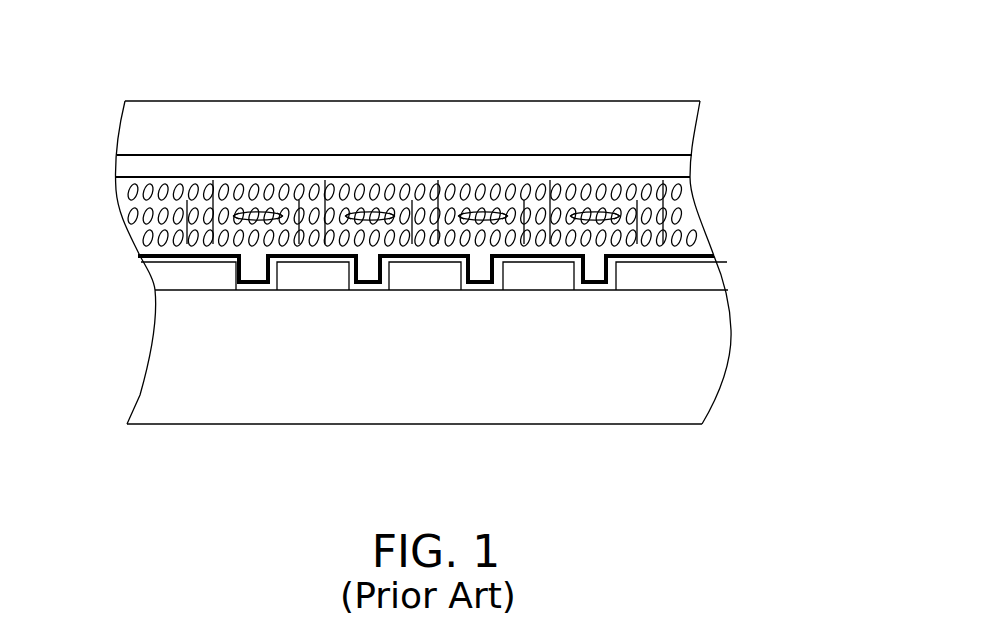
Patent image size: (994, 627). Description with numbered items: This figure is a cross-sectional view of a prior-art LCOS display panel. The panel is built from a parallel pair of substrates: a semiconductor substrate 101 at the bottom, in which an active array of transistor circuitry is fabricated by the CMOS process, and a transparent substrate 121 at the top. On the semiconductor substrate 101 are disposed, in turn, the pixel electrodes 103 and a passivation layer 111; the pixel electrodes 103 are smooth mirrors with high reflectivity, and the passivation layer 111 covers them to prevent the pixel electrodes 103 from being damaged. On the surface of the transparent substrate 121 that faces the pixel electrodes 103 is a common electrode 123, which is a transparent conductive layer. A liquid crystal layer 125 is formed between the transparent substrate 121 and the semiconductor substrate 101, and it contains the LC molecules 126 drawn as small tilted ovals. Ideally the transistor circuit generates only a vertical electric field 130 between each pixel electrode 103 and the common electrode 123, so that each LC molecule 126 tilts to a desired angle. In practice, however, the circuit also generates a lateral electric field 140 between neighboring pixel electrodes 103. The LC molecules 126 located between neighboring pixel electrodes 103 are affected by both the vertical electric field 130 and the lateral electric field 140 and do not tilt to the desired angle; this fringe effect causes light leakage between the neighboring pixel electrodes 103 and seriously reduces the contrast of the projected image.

The semiconductor substrate 101 is at (714, 350).
The pixel electrodes 103 is at (157, 274).
The passivation layer 111 is at (700, 258).
The transparent substrate 121 is at (683, 131).
The common electrode 123 is at (680, 170).
The liquid crystal layer 125 is at (108, 178).
The LC molecule 126 is at (680, 216).
The vertical electric field 130 is at (187, 200).
The lateral electric field 140 is at (258, 212).